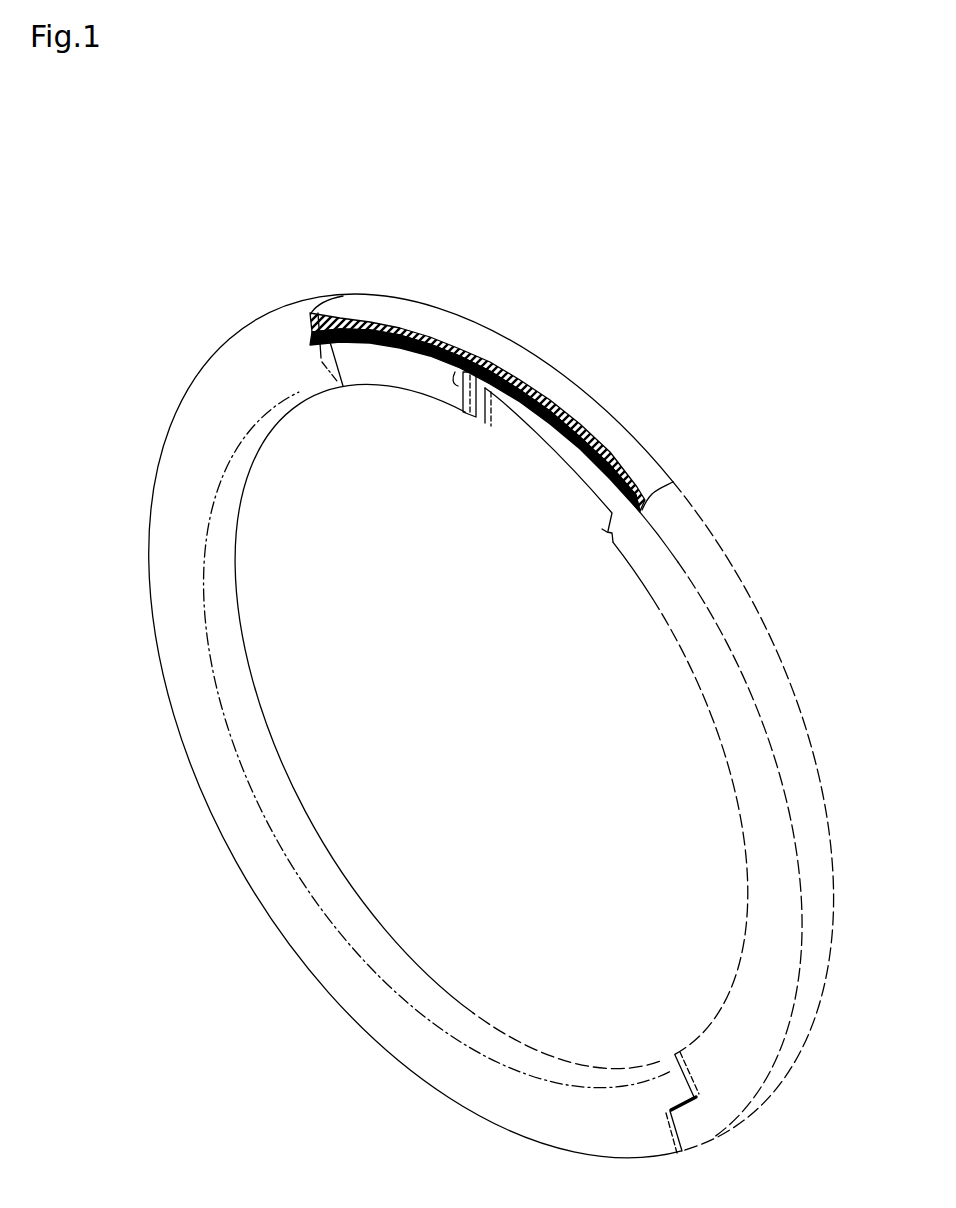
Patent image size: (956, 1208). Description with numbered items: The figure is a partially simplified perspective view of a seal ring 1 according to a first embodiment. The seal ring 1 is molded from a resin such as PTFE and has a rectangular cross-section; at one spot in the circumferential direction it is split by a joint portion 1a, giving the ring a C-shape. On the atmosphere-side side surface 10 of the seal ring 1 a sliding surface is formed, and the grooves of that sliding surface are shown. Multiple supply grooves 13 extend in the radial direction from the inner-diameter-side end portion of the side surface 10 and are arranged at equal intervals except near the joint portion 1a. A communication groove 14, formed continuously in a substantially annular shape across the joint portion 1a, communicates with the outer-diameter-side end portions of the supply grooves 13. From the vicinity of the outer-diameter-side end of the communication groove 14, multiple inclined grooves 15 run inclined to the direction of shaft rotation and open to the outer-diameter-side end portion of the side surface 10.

The seal ring 1 is at (686, 358).
The joint portion 1a is at (697, 1078).
The side surface 10 is at (388, 368).
The supply grooves 13 is at (462, 352).
The communication groove 14 is at (530, 400).
The inclined grooves 15 is at (509, 375).